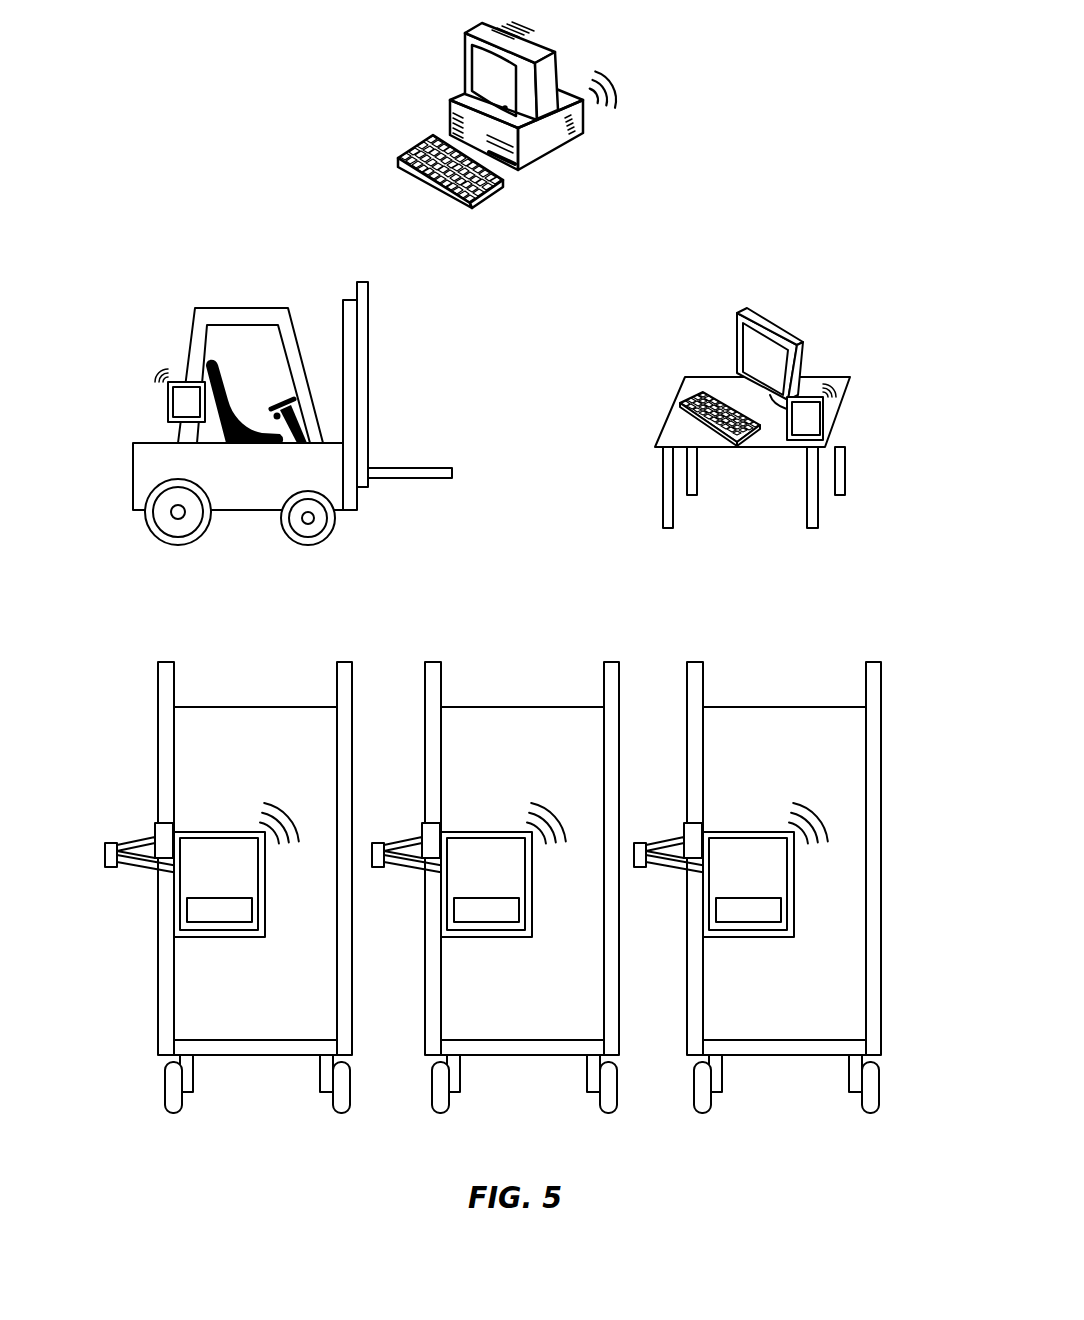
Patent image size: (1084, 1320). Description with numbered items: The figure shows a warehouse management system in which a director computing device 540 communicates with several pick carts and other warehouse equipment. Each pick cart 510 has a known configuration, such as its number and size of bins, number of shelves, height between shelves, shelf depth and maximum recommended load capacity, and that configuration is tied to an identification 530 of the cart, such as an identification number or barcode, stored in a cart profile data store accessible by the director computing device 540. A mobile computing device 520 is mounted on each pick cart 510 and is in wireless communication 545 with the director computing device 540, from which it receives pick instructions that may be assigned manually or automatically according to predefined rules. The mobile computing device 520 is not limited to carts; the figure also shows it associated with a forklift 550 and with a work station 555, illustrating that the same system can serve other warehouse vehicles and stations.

The pick cart 510 is at (345, 665).
The mobile computing device 520 is at (173, 397).
The identification 530 is at (205, 753).
The director computing device 540 is at (450, 100).
The wireless communication 545 is at (613, 80).
The forklift 550 is at (195, 320).
The work station 555 is at (737, 340).